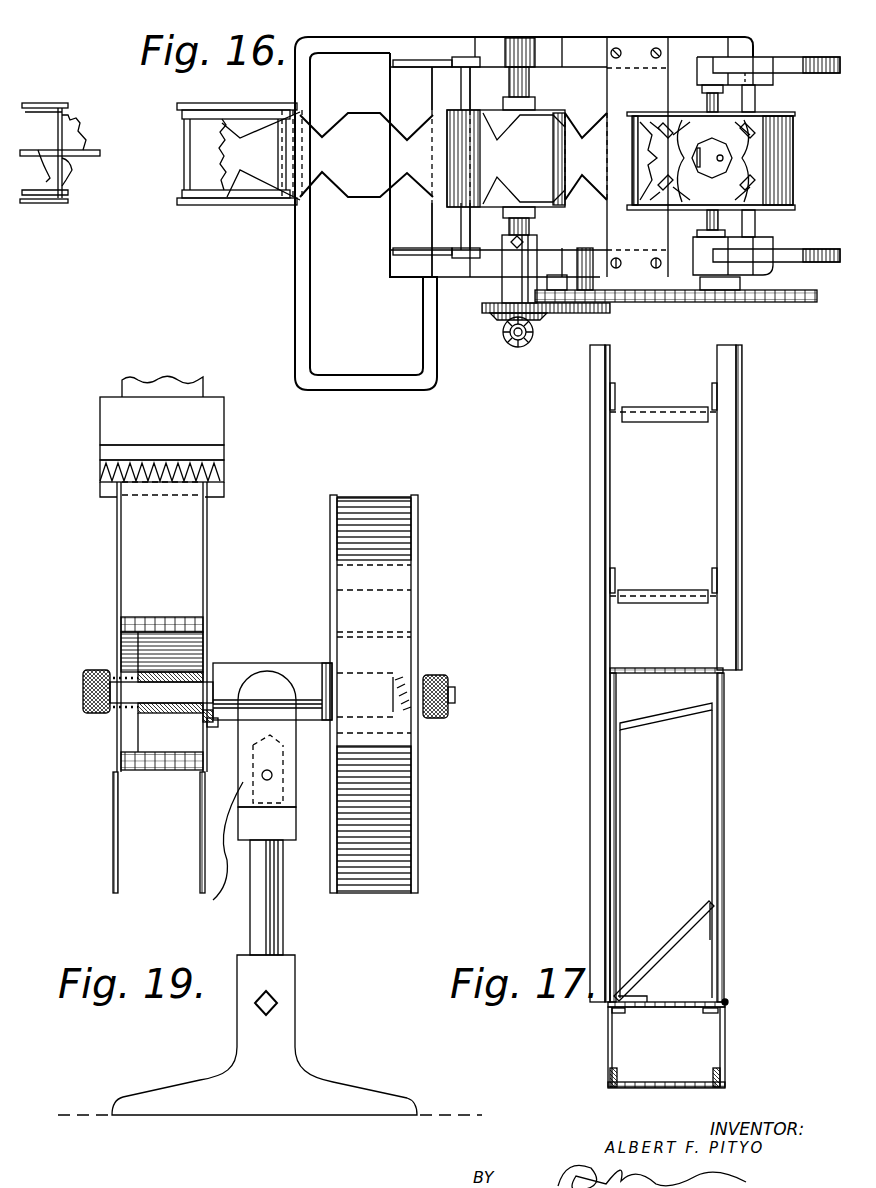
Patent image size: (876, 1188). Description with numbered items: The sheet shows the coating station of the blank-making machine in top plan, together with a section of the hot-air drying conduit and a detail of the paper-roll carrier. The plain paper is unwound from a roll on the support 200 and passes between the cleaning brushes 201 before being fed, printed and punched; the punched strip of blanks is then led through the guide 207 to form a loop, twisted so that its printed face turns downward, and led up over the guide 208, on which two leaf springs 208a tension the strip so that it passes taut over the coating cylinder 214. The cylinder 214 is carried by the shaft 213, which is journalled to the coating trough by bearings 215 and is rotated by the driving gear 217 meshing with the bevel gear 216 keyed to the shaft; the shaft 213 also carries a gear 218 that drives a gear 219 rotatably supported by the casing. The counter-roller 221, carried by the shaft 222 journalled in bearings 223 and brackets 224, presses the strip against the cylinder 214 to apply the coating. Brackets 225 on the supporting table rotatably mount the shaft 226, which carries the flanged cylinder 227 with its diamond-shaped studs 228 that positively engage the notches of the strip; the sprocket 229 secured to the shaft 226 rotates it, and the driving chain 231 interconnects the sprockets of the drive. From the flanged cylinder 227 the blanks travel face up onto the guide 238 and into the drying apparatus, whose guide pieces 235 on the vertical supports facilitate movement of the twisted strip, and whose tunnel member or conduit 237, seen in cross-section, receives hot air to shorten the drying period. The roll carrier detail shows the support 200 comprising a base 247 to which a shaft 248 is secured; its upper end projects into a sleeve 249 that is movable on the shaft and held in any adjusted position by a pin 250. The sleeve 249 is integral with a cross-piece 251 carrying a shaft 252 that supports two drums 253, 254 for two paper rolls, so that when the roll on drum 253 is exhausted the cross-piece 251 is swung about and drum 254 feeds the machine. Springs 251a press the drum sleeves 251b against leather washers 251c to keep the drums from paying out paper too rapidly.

In FIG. 19, the support 200 is at (241, 623).
In FIG. 19, the cleaning brushes 201 is at (225, 470).
In FIG. 16, the guide 207 is at (63, 88).
In FIG. 16, the guide 208 is at (213, 103).
In FIG. 16, the leaf springs 208a is at (183, 125).
In FIG. 16, the shaft 213 is at (527, 100).
In FIG. 16, the cylinder 214 is at (500, 115).
In FIG. 16, the bearings 215 is at (515, 48).
In FIG. 16, the bevel gear 216 is at (500, 325).
In FIG. 16, the driving gear 217 is at (523, 345).
In FIG. 16, the gear 218 is at (487, 305).
In FIG. 16, the gear 219 is at (585, 313).
In FIG. 16, the counter-roller 221 is at (447, 108).
In FIG. 16, the shaft 222 is at (415, 232).
In FIG. 16, the bearings 223 is at (422, 253).
In FIG. 16, the brackets 224 is at (433, 60).
In FIG. 16, the brackets 225 is at (806, 50).
In FIG. 16, the shaft 226 is at (710, 108).
In FIG. 16, the flanged cylinder 227 is at (773, 110).
In FIG. 16, the diamond-shaped studs 228 is at (668, 127).
In FIG. 16, the sprocket 229 is at (728, 298).
In FIG. 16, the driving chain 231 is at (650, 307).
In FIG. 17, the guide pieces 235 is at (685, 388).
In FIG. 17, the tunnel member or conduit 237 is at (717, 806).
In FIG. 17, the guide 238 is at (690, 1092).
In FIG. 19, the base 247 is at (380, 1097).
In FIG. 19, the shaft 248 is at (278, 925).
In FIG. 19, the sleeve 249 is at (217, 856).
In FIG. 19, the pin 250 is at (267, 775).
In FIG. 19, the cross-piece 251 is at (248, 667).
In FIG. 19, the springs 251a is at (402, 715).
In FIG. 19, the drum sleeves 251b is at (147, 670).
In FIG. 19, the leather washers 251c is at (224, 736).
In FIG. 19, the shaft 252 is at (152, 708).
In FIG. 19, the drum 253 is at (207, 538).
In FIG. 19, the drum 254 is at (420, 512).